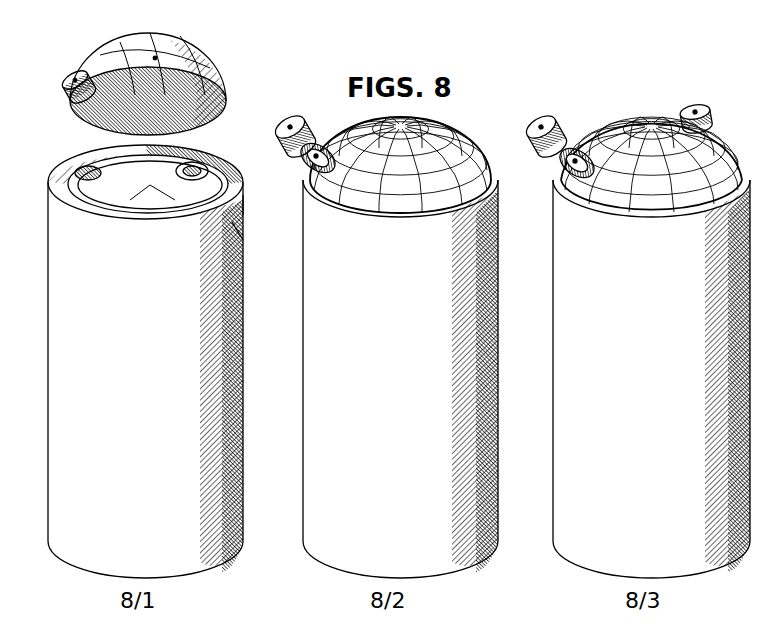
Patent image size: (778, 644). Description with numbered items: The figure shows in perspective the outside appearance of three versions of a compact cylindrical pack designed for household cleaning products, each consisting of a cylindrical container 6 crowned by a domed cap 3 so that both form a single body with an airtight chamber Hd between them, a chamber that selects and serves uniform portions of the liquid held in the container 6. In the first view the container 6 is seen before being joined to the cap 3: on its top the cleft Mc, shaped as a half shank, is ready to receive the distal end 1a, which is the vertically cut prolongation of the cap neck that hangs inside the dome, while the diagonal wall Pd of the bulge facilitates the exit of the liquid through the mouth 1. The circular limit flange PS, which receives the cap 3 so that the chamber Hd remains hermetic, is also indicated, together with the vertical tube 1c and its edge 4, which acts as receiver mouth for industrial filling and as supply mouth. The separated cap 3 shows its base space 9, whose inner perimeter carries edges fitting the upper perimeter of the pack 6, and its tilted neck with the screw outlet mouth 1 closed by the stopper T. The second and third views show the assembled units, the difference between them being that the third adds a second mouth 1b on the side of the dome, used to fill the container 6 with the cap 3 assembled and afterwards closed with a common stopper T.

The screw outlet mouth 1 is at (60, 62).
The neck distal end 1a is at (70, 95).
The second mouth 1b is at (702, 106).
The vertical tube 1c is at (243, 200).
The domed cap 3 is at (160, 48).
The tube edge 4 is at (208, 168).
The cylindrical container 6 is at (320, 338).
The base space 9 is at (232, 95).
The stopper T is at (284, 118).
The half shank cleft Mc is at (108, 166).
The diagonal wall Pd is at (75, 172).
The circular limit flange PS is at (196, 152).
The airtight chamber Hd is at (250, 238).